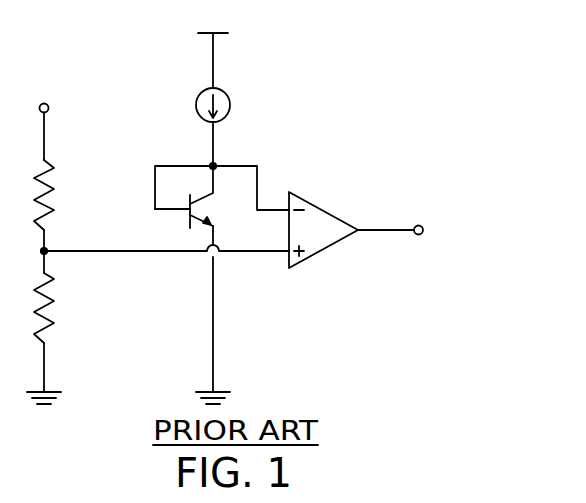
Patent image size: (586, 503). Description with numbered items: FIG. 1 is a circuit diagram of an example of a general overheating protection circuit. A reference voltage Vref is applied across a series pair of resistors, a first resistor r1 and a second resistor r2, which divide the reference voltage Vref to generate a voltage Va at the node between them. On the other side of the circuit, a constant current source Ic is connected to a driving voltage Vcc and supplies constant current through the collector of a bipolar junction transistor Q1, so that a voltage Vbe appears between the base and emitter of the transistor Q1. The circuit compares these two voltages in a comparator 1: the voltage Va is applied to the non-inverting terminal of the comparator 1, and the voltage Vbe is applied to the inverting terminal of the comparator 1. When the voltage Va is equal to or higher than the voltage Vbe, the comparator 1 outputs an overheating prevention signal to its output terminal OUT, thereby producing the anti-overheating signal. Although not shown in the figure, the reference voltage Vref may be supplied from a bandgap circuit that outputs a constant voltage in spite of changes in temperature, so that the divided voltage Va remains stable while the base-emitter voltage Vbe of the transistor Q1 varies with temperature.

The comparator 1 is at (323, 208).
The bipolar junction transistor Q1 is at (214, 197).
The first resistor r1 is at (58, 195).
The second resistor r2 is at (58, 308).
The constant current source Ic is at (202, 105).
The driving voltage Vcc is at (213, 47).
The reference voltage Vref is at (45, 116).
The voltage Va is at (149, 252).
The voltage between base and emitter Vbe is at (169, 224).
The output terminal OUT is at (415, 230).